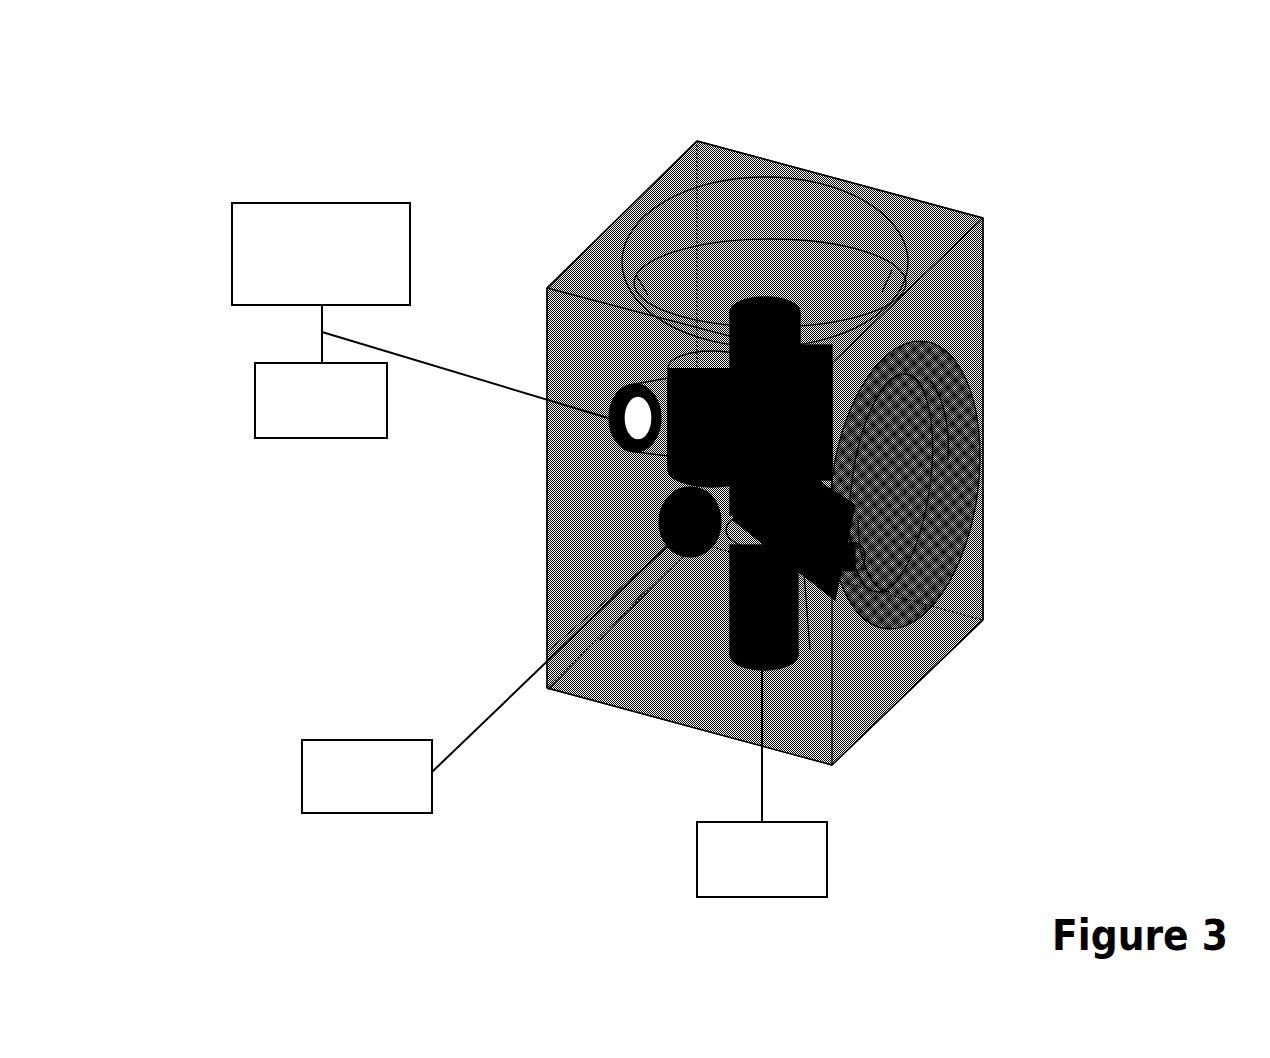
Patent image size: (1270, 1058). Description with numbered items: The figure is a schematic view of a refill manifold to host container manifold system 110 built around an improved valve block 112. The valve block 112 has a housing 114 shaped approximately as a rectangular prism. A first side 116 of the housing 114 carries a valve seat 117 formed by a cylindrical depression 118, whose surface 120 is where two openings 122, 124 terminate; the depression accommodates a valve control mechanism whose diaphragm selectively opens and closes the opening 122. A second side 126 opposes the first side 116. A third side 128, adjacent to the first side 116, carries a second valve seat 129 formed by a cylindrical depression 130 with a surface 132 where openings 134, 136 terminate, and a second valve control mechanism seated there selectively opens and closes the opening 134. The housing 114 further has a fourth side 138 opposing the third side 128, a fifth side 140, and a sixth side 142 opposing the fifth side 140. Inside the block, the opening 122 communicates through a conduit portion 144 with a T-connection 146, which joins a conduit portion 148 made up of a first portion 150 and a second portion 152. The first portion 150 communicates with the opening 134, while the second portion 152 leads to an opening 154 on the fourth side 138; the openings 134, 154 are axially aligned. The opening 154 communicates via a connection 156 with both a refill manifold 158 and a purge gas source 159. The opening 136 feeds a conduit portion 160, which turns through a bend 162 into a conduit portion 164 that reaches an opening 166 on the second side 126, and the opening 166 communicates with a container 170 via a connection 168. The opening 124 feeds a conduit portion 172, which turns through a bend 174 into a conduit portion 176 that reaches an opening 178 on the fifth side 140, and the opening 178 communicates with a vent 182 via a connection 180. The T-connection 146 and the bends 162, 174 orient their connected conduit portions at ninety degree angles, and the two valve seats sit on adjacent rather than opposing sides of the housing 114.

The refill manifold to host container manifold system 110 is at (342, 126).
The valve block 112 is at (697, 140).
The housing 114 is at (915, 200).
The first side 116 is at (722, 155).
The valve seat 117 is at (746, 248).
The cylindrical depression 118 is at (818, 203).
The surface 120 is at (818, 265).
The opening 122 is at (768, 297).
The opening 124 is at (706, 353).
The second side 126 is at (617, 727).
The third side 128 is at (890, 675).
The valve seat 129 is at (903, 440).
The cylindrical depression 130 is at (937, 518).
The surface 132 is at (880, 515).
The opening 134 is at (860, 477).
The opening 136 is at (865, 558).
The fourth side 138 is at (532, 530).
The fifth side 140 is at (573, 590).
The sixth side 142 is at (998, 234).
The conduit portion 144 is at (767, 368).
The T-connection 146 is at (800, 430).
The conduit portion 148 is at (642, 385).
The first portion 150 is at (810, 462).
The second portion 152 is at (707, 430).
The opening 154 is at (605, 413).
The connection 156 is at (433, 363).
The refill manifold 158 is at (232, 245).
The purge gas source 159 is at (255, 410).
The conduit portion 160 is at (803, 555).
The bend 162 is at (690, 548).
The conduit portion 164 is at (763, 648).
The opening 166 is at (743, 677).
The connection 168 is at (762, 795).
The container 170 is at (753, 897).
The conduit portion 172 is at (693, 480).
The bend 174 is at (720, 502).
The conduit portion 176 is at (684, 549).
The opening 178 is at (687, 540).
The connection 180 is at (487, 725).
The vent 182 is at (302, 790).